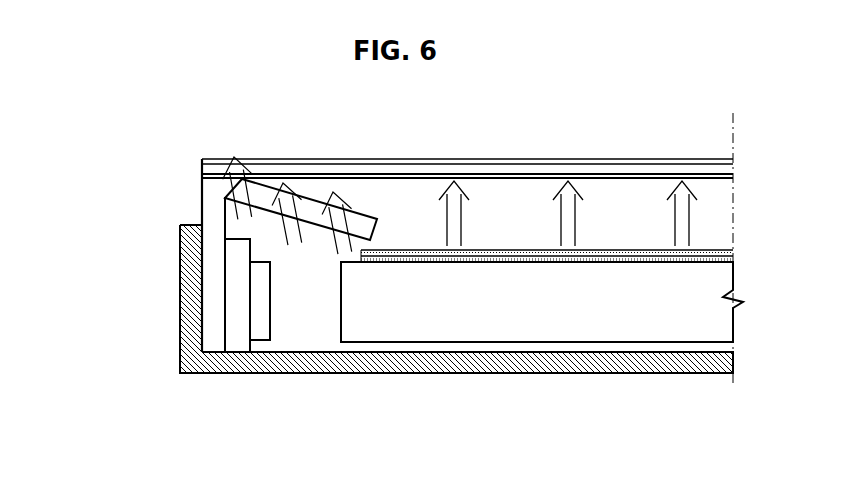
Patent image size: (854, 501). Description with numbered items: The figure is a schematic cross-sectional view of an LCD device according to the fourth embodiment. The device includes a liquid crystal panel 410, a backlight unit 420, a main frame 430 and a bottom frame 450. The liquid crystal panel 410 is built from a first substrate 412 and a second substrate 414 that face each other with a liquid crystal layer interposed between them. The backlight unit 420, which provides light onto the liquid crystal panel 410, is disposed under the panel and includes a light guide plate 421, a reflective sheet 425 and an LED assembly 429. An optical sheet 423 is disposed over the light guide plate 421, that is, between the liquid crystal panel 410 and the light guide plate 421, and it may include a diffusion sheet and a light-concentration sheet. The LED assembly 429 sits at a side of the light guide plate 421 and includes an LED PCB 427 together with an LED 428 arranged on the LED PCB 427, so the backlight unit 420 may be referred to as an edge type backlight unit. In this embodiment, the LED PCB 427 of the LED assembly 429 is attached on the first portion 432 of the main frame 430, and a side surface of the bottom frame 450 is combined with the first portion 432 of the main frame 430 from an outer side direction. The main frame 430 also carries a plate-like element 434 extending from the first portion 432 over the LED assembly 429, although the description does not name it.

The liquid crystal panel 410 is at (467, 127).
The first substrate 412 is at (578, 107).
The second substrate 414 is at (564, 163).
The backlight unit 420 is at (475, 349).
The light guide plate 421 is at (388, 312).
The optical sheet 423 is at (536, 263).
The reflective sheet 425 is at (455, 346).
The LED PCB 427 is at (240, 320).
The LED 428 is at (260, 318).
The LED assembly 429 is at (252, 330).
The main frame 430 is at (214, 233).
The first portion 432 is at (207, 297).
The reflective plate 434 is at (270, 198).
The bottom frame 450 is at (418, 308).